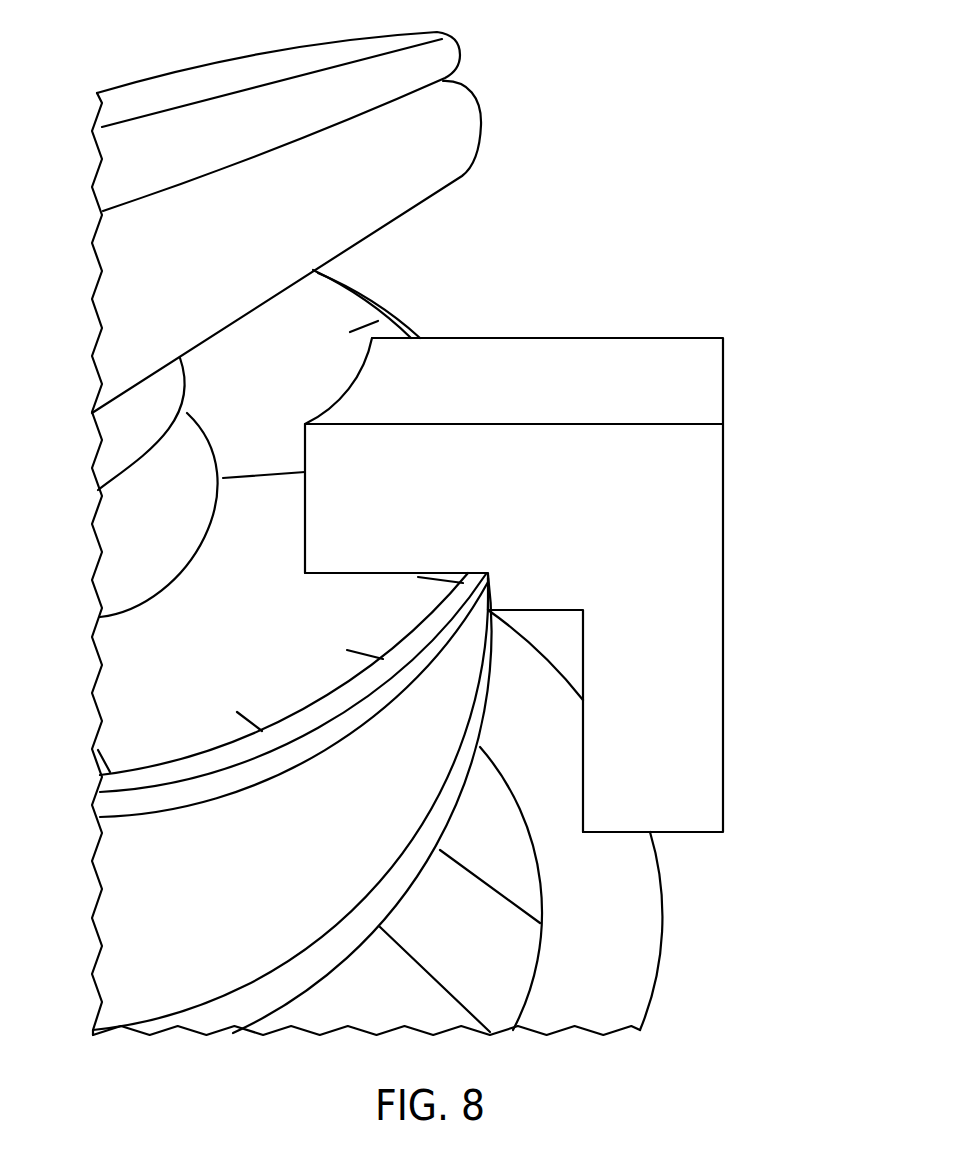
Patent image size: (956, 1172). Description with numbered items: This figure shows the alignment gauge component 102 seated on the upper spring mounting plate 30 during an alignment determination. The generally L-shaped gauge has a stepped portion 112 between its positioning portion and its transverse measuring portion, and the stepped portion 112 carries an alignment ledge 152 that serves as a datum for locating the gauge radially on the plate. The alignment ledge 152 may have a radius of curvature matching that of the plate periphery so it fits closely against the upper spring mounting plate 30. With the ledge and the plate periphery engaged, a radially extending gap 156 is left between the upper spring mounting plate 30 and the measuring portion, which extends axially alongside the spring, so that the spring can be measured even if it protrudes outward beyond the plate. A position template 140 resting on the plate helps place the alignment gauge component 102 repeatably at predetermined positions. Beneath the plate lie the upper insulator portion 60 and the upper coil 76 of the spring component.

The alignment gauge component 102 is at (752, 421).
The stepped portion 112 is at (560, 608).
The position template 140 is at (113, 649).
The upper spring mounting plate 30 is at (105, 810).
The upper insulator portion 60 is at (113, 933).
The upper coil 76 is at (196, 1022).
The alignment ledge 152 is at (490, 581).
The radially extending gap 156 is at (556, 636).